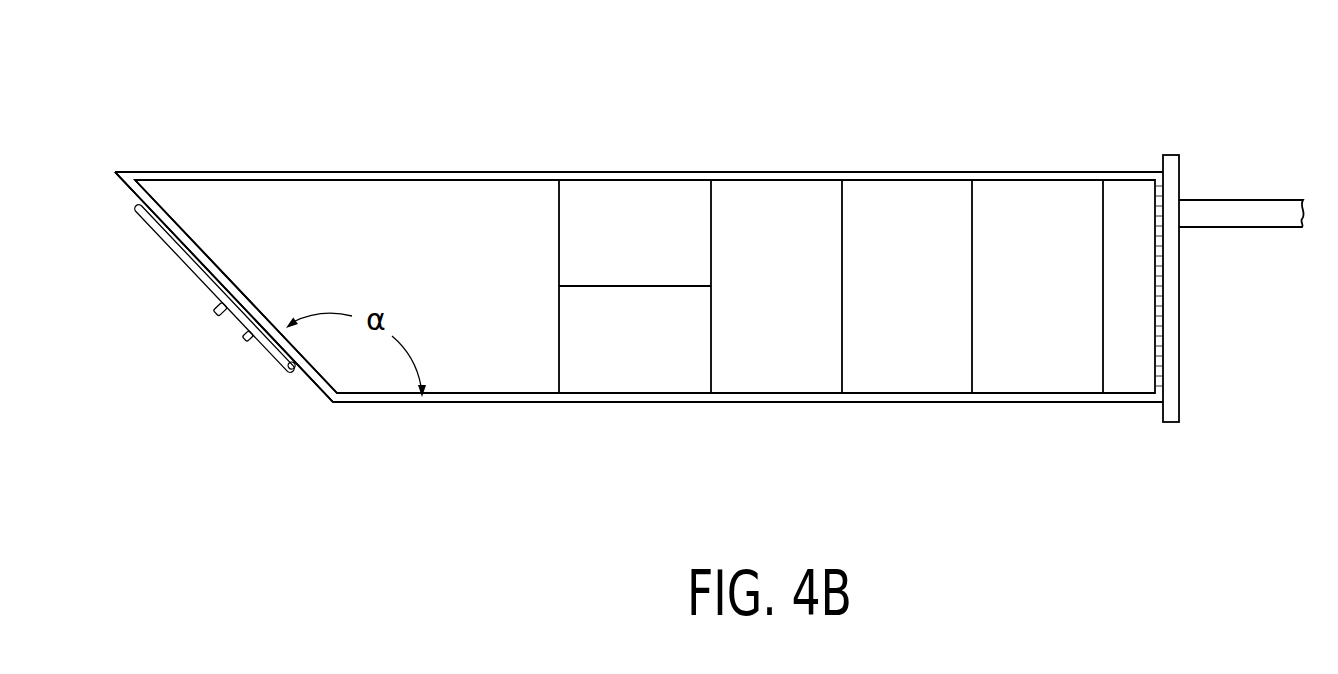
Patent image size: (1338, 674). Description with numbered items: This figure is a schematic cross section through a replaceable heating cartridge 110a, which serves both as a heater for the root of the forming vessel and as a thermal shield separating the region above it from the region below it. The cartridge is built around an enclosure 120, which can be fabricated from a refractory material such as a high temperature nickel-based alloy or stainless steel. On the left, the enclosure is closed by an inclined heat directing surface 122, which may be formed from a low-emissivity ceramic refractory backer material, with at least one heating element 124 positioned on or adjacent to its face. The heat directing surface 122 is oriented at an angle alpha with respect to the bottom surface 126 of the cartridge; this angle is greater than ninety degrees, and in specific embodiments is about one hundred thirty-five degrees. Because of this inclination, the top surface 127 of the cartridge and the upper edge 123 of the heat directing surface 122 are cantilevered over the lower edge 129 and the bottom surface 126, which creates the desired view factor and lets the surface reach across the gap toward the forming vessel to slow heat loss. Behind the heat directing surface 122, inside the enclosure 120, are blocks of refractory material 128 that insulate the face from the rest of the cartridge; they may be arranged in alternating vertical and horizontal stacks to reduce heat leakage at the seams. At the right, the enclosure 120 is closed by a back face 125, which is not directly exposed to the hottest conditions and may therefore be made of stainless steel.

The heating cartridge 110a is at (449, 532).
The enclosure 120 is at (477, 140).
The heat directing surface 122 is at (305, 389).
The upper edge 123 is at (113, 158).
The heating element 124 is at (158, 235).
The back face 125 is at (1205, 308).
The bottom surface 126 is at (503, 413).
The top surface 127 is at (352, 146).
The blocks of refractory material 128 is at (756, 152).
The lower edge 129 is at (373, 413).